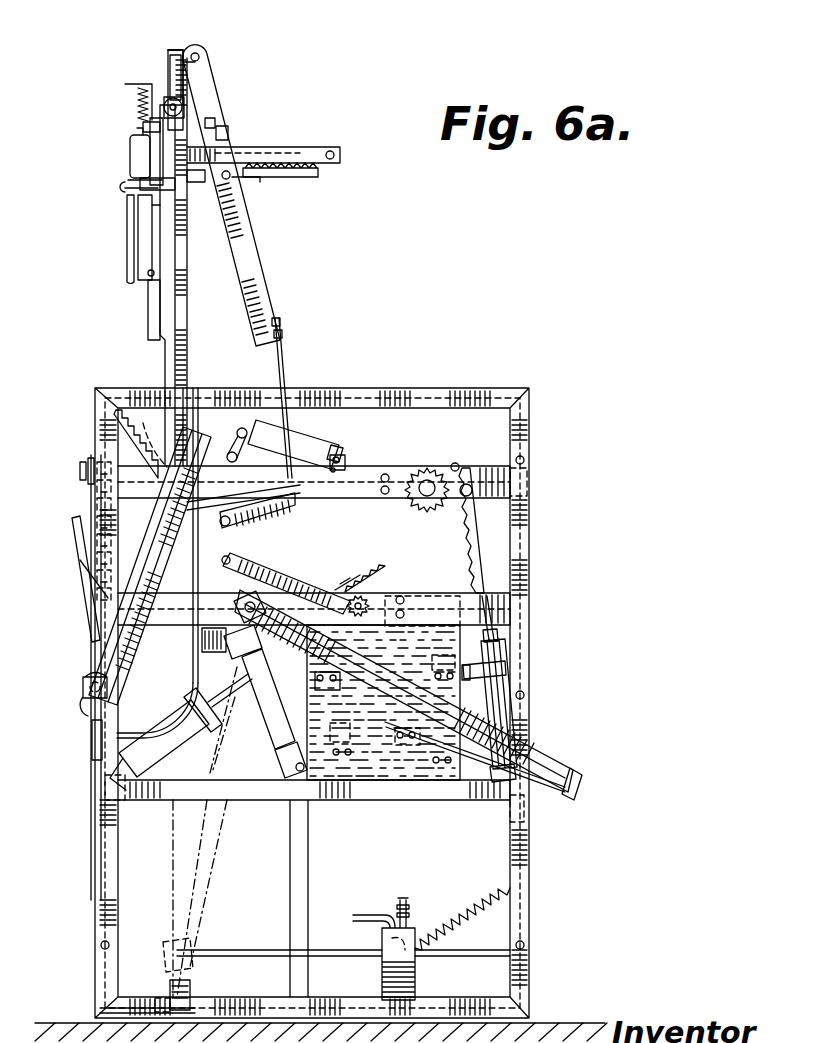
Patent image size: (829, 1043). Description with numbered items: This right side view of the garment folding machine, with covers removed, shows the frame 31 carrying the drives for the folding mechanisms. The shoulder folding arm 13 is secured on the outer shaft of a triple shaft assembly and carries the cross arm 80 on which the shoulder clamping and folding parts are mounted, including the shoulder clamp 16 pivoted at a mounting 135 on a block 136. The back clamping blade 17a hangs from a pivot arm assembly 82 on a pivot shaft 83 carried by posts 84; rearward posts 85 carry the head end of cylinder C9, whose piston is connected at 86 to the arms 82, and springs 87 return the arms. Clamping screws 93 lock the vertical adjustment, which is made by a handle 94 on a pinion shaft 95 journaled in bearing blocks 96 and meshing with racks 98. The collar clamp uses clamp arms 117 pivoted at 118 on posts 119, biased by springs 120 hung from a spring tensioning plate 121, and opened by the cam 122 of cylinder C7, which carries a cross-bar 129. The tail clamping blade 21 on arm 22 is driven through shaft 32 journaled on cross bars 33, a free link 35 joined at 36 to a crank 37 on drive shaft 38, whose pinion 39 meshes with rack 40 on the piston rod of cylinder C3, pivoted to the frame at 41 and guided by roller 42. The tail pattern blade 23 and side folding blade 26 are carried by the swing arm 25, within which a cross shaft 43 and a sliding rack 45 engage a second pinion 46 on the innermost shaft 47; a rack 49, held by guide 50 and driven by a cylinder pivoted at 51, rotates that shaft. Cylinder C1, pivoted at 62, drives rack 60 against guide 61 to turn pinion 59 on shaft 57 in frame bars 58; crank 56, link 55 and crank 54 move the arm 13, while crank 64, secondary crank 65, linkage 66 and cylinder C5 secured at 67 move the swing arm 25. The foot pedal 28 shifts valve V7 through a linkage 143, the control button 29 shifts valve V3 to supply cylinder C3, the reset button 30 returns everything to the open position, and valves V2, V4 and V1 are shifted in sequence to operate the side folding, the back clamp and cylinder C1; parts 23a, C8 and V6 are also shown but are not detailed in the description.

The arm 13 is at (187, 288).
The left side shoulder clamp 16 is at (148, 325).
The back clamping blade 17a is at (288, 370).
The tail back clamping blade 21 is at (420, 745).
The tail clamping arm 22 is at (152, 222).
The tail folding pattern blade 23 is at (91, 876).
The guide rail portion 23a is at (85, 590).
The swinging arm 25 is at (150, 566).
The right side tail tip and side folding blade 26 is at (92, 755).
The foot pedal control 28 is at (127, 1006).
The control button 29 is at (80, 470).
The reset control button 30 is at (75, 533).
The frame 31 is at (95, 398).
The shaft 32 is at (268, 588).
The cross bars 33 is at (383, 620).
The free link 35 is at (333, 588).
The pivot joint 36 is at (271, 607).
The crank 37 is at (352, 572).
The drive shaft 38 is at (368, 600).
The pinion 39 is at (404, 606).
The rack 40 is at (365, 572).
The pivotal connection 41 is at (105, 790).
The backing roller 42 is at (345, 571).
The cross shaft 43 is at (83, 683).
The rack 45 is at (157, 705).
The second pinion 46 is at (151, 436).
The innermost shaft 47 is at (203, 388).
The rack 49 is at (117, 432).
The backup roller 50 is at (97, 488).
The pivotal mounting 51 is at (335, 764).
The crank 54 is at (224, 525).
The link 55 is at (315, 506).
The crank 56 is at (457, 464).
The shaft 57 is at (427, 480).
The frame bars 58 is at (486, 480).
The pinion 59 is at (425, 512).
The rack 60 is at (478, 532).
The backup roller 61 is at (514, 480).
The pivotal mounting 62 is at (510, 816).
The crank 64 is at (243, 492).
The secondary crank 65 is at (240, 430).
The linkage 66 is at (367, 474).
The pivotal securing point 67 is at (340, 458).
The cross arm 80 is at (143, 125).
The pivot arm assembly 82 is at (262, 280).
The pivot shaft 83 is at (197, 54).
The posts 84 is at (183, 112).
The posts 85 is at (250, 153).
The pivot connection 86 is at (222, 181).
The springs 87 is at (280, 175).
The clamping screws 93 is at (228, 133).
The handle 94 is at (190, 75).
The pinion shaft 95 is at (168, 75).
The bearing blocks 96 is at (215, 122).
The racks 98 is at (152, 160).
The clamp arms 117 is at (127, 257).
The pivot 118 is at (125, 188).
The posts 119 is at (128, 180).
The clamp biasing springs 120 is at (138, 100).
The spring tensioning plate 121 is at (132, 84).
The clamp opening cam 122 is at (138, 210).
The cross-bar 129 is at (204, 173).
The pivot mounting 135 is at (148, 274).
The block 136 is at (77, 307).
The linkage 143 is at (233, 950).
The cylinder C1 is at (505, 702).
The cylinder C3 is at (165, 745).
The cylinder C5 is at (303, 442).
The clamp opening cylinder C7 is at (130, 150).
The cylinder C8 is at (168, 58).
The cylinder C9 is at (248, 180).
The valve V1 is at (423, 733).
The four-way valve V2 is at (441, 790).
The four-way valve V3 is at (340, 742).
The valve V4 is at (451, 651).
The valve V6 is at (334, 684).
The valve V7 is at (382, 931).